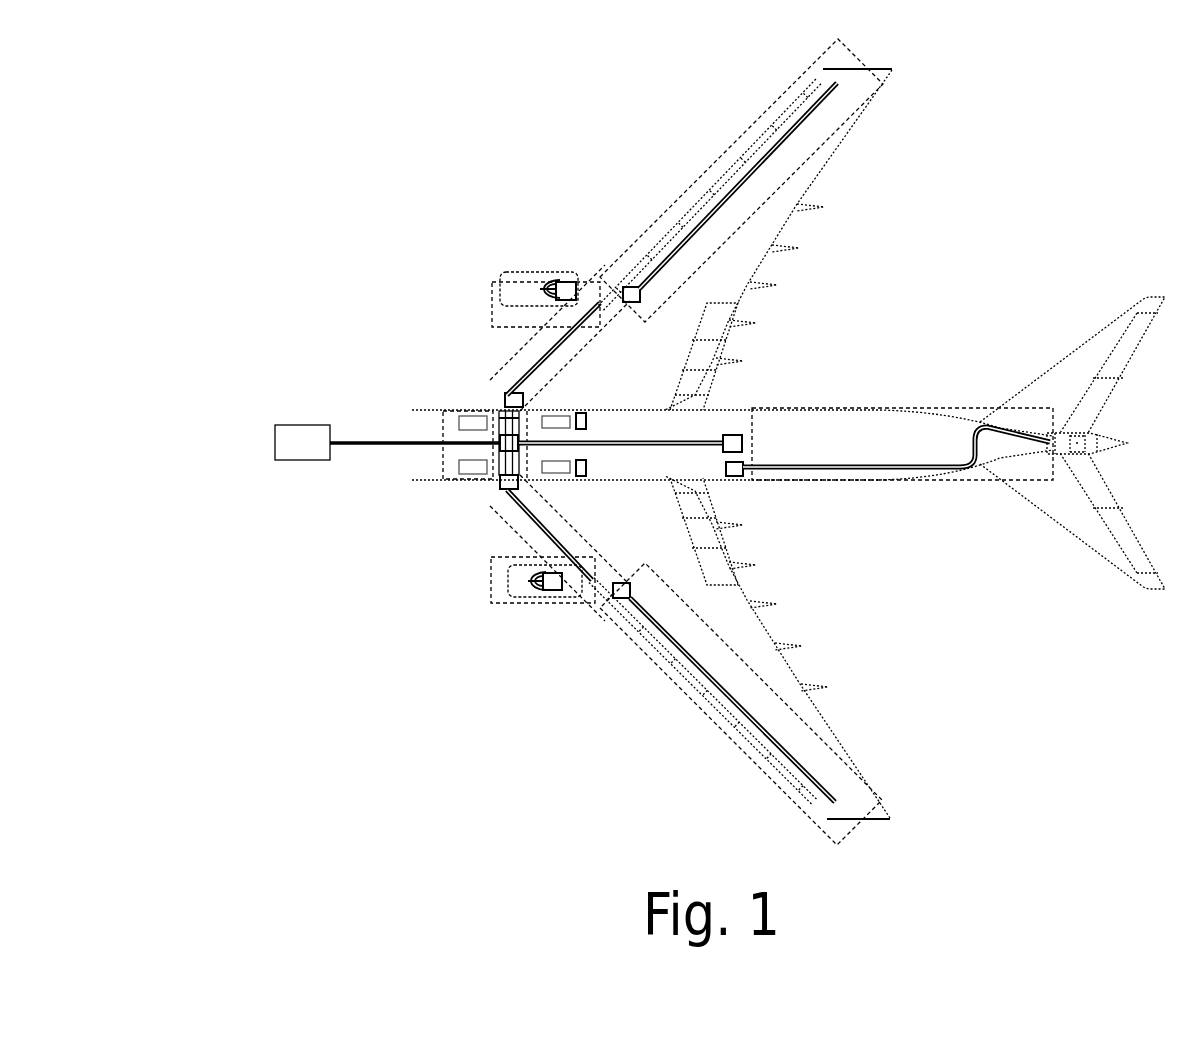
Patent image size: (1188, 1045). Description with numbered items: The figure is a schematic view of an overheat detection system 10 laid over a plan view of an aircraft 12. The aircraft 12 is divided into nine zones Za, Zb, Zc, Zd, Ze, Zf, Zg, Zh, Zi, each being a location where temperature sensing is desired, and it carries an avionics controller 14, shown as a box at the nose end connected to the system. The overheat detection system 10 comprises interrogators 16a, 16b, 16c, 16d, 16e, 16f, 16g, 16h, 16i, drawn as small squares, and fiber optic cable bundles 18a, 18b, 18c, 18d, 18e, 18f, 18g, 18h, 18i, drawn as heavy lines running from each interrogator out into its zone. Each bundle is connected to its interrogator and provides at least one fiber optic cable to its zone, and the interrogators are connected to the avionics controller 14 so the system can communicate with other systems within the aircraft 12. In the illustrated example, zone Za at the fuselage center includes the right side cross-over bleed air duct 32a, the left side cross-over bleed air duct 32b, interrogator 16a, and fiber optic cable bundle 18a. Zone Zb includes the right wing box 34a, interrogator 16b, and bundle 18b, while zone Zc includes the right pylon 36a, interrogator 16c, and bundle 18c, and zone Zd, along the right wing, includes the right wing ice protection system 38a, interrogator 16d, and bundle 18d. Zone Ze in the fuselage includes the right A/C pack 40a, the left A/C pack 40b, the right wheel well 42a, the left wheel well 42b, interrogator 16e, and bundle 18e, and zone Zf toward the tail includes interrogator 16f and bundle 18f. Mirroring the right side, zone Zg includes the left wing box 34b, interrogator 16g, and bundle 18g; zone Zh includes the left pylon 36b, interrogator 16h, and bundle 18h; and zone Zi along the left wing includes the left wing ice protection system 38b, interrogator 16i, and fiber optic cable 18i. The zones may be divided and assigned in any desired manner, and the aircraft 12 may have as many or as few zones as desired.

The overheat detection system 10 is at (205, 160).
The aircraft 12 is at (824, 583).
The avionics controller 14 is at (387, 442).
The interrogator 16a is at (500, 440).
The interrogator 16b is at (497, 393).
The interrogator 16c is at (572, 298).
The interrogator 16d is at (628, 287).
The interrogator 16e is at (740, 435).
The interrogator 16f is at (740, 478).
The interrogator 16g is at (503, 483).
The interrogator 16h is at (557, 590).
The interrogator 16i is at (620, 597).
The fiber optic cable bundle 18a is at (498, 415).
The fiber optic cable bundle 18b is at (527, 340).
The fiber optic cable bundle 18c is at (550, 293).
The fiber optic cable bundle 18d is at (803, 120).
The fiber optic cable bundle 18e is at (630, 440).
The fiber optic cable bundle 18f is at (867, 465).
The fiber optic cable bundle 18g is at (507, 515).
The fiber optic cable bundle 18h is at (530, 590).
The fiber optic cable 18i is at (770, 737).
The right side cross-over bleed air duct 32a is at (460, 425).
The left side cross-over bleed air duct 32b is at (457, 473).
The right wing box 34a is at (527, 370).
The left wing box 34b is at (537, 540).
The right pylon 36a is at (535, 288).
The left pylon 36b is at (527, 603).
The right wing ice protection system 38a is at (740, 165).
The left wing ice protection system 38b is at (710, 697).
The right A/C pack 40a is at (566, 414).
The left A/C pack 40b is at (557, 475).
The right wheel well 42a is at (583, 412).
The left wheel well 42b is at (597, 478).
The zone Za is at (457, 455).
The zone Zb is at (493, 390).
The zone Zc is at (493, 303).
The zone Zd is at (782, 100).
The zone Ze is at (720, 478).
The zone Zf is at (850, 410).
The zone Zg is at (490, 510).
The zone Zh is at (570, 607).
The zone Zi is at (777, 775).